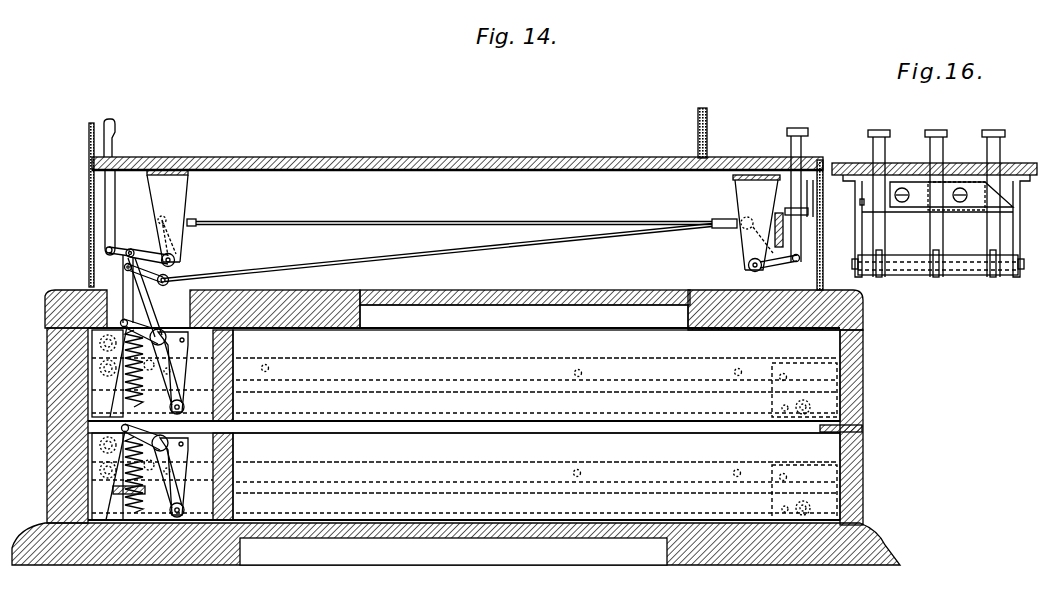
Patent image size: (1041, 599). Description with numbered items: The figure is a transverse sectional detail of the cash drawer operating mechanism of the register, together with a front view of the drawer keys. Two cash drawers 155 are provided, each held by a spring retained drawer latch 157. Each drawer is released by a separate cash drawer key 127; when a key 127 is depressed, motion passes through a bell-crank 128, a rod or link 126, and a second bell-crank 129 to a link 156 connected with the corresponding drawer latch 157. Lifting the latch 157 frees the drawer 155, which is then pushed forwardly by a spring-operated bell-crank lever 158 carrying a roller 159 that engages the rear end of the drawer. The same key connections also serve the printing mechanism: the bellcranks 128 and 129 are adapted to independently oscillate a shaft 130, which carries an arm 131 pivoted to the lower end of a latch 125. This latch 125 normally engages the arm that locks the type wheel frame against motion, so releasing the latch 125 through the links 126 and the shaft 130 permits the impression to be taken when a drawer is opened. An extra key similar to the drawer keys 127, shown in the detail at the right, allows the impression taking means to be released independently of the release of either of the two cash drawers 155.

In FIG. 14, the latch 125 is at (108, 207).
In FIG. 14, the links 126 is at (373, 222).
In FIG. 14, the cash drawer keys 127 is at (799, 127).
In FIG. 16, the cash drawer keys 127 is at (935, 128).
In FIG. 14, the bellcrank 128 is at (780, 262).
In FIG. 14, the bellcrank 129 is at (181, 278).
In FIG. 14, the shaft 130 is at (178, 262).
In FIG. 14, the arm 131 is at (120, 254).
In FIG. 14, the cash drawers 155 is at (863, 397).
In FIG. 14, the links 156 is at (157, 296).
In FIG. 14, the drawer latches 157 is at (237, 344).
In FIG. 14, the spring-operated bell-crank lever 158 is at (237, 373).
In FIG. 14, the roller 159 is at (237, 397).